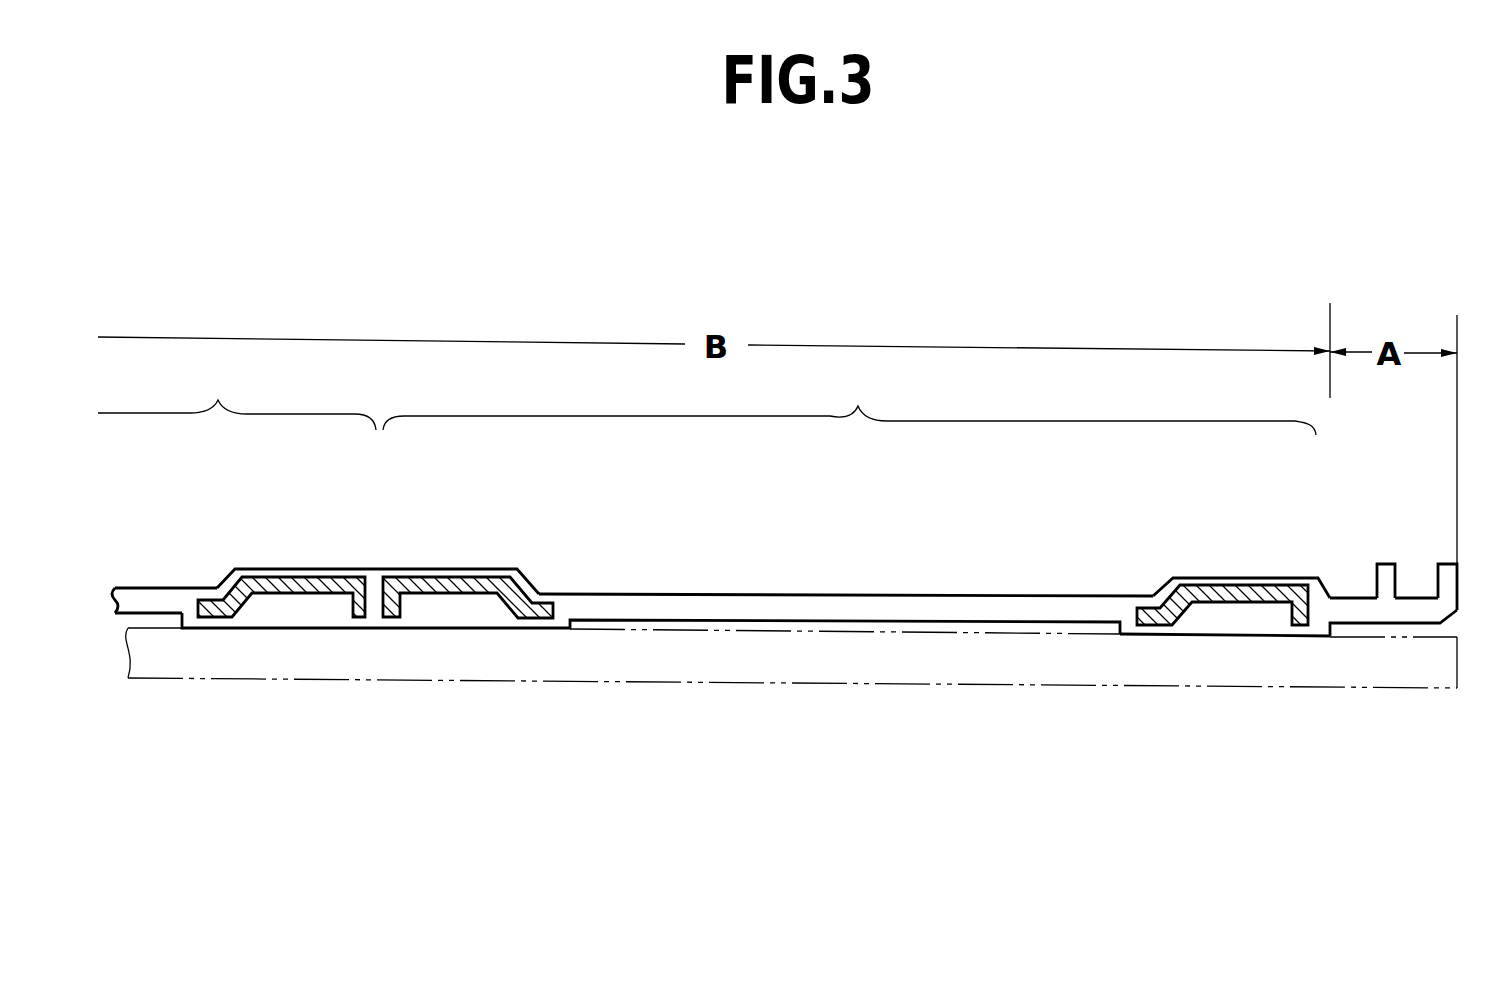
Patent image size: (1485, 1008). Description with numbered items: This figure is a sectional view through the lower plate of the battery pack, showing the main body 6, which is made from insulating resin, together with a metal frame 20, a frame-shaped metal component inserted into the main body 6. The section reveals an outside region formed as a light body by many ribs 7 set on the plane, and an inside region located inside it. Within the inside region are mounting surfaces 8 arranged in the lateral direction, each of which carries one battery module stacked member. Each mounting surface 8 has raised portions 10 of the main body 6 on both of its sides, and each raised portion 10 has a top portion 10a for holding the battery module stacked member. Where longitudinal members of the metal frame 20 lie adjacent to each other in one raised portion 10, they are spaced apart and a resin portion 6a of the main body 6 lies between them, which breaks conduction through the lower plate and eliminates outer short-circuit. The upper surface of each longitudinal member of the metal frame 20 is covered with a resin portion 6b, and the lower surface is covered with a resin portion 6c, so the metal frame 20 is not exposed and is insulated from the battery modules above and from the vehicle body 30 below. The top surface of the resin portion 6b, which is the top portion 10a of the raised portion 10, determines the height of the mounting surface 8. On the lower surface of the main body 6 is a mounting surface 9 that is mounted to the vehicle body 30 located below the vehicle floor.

The main body 6 is at (708, 585).
The resin portion 6a is at (377, 617).
The resin portion 6b is at (411, 570).
The resin portion 6c is at (537, 625).
The rib 7 is at (1383, 580).
The mounting surface 8 is at (707, 399).
The mounting surface 9 is at (1268, 637).
The raised portion 10 is at (222, 584).
The top portion 10a is at (476, 577).
The metal frame 20 is at (482, 602).
The vehicle body 30 is at (1362, 690).